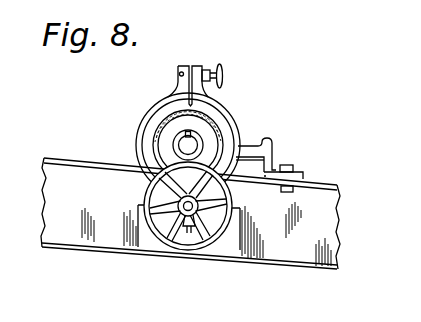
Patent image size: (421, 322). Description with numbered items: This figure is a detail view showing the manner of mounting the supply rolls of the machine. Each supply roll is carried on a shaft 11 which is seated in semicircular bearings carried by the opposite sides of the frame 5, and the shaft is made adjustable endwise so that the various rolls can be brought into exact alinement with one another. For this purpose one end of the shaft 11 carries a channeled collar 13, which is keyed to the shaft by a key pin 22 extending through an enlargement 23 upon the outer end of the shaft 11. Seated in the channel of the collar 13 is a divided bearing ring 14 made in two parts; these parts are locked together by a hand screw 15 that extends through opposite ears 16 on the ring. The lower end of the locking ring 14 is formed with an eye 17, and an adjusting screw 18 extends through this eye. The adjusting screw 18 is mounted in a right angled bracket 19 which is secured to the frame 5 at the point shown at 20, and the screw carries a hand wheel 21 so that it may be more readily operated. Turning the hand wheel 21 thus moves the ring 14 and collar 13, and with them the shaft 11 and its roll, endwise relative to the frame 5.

The frame 5 is at (313, 181).
The shaft 11 is at (202, 140).
The channeled collar 13 is at (224, 133).
The divided bearing ring 14 is at (182, 118).
The hand screw 15 is at (223, 84).
The ears 16 is at (178, 72).
The eye 17 is at (150, 183).
The adjusting screw 18 is at (186, 210).
The right angled bracket 19 is at (189, 233).
The securing point of bracket 20 is at (239, 246).
The hand wheel 21 is at (148, 195).
The key pin 22 is at (182, 135).
The enlargement 23 is at (178, 146).